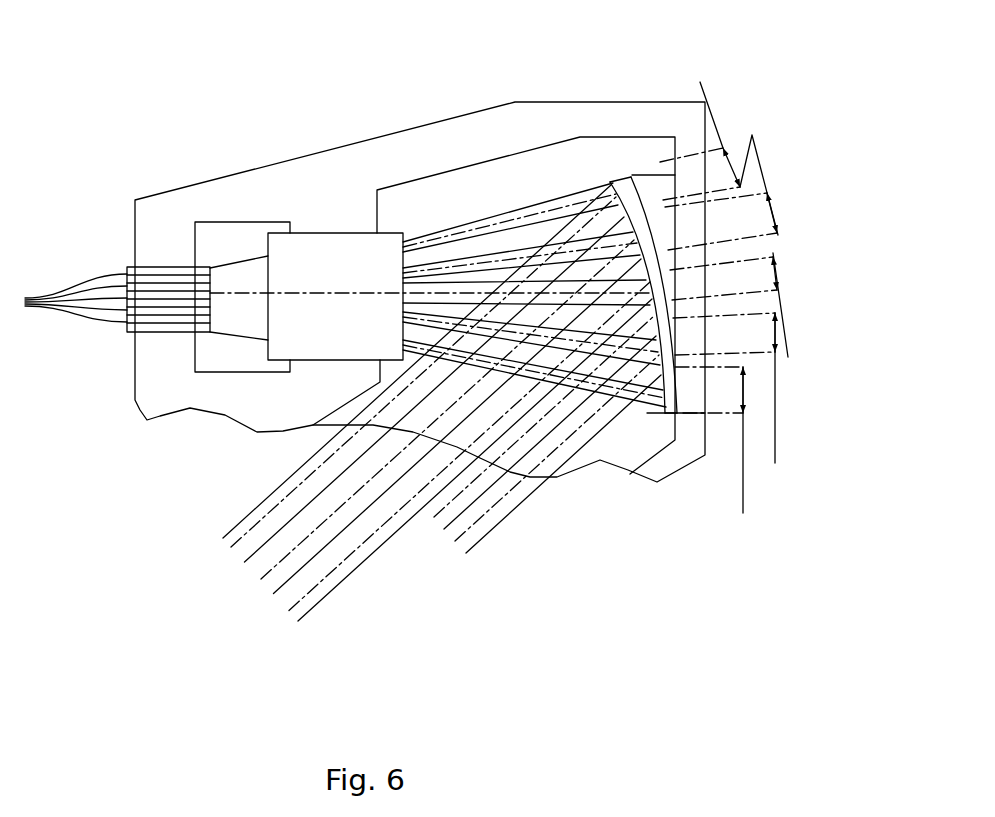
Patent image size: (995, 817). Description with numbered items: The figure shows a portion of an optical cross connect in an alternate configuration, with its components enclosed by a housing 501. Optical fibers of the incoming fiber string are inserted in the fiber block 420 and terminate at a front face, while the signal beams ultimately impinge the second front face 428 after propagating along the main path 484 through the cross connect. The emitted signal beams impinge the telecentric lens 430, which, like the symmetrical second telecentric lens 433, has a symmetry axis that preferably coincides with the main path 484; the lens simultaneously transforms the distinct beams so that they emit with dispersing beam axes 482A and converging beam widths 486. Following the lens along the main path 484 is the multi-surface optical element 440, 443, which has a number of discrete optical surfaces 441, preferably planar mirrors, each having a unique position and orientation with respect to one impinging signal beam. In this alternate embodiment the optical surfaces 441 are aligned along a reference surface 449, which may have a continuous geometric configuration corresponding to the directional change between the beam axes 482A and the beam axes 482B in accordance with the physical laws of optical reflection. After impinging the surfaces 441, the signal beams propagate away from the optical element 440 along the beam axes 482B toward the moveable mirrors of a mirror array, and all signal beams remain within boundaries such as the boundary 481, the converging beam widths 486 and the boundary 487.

The fiber block 420 is at (117, 235).
The front face 428 is at (167, 267).
The telecentric lens 430 is at (298, 224).
The second telecentric lens 433 is at (333, 232).
The multi-surface optical element 440 is at (622, 221).
The multi-surface optical element 443 is at (598, 226).
The discrete optical surfaces 441 is at (739, 297).
The reference surface 449 is at (648, 237).
The boundary 481 is at (238, 333).
The main path 484 is at (250, 293).
The converging beam widths 486 is at (532, 207).
The dispersing beam axes 482A is at (520, 234).
The beam axes 482B is at (442, 411).
The boundary 487 is at (357, 585).
The housing 501 is at (143, 418).